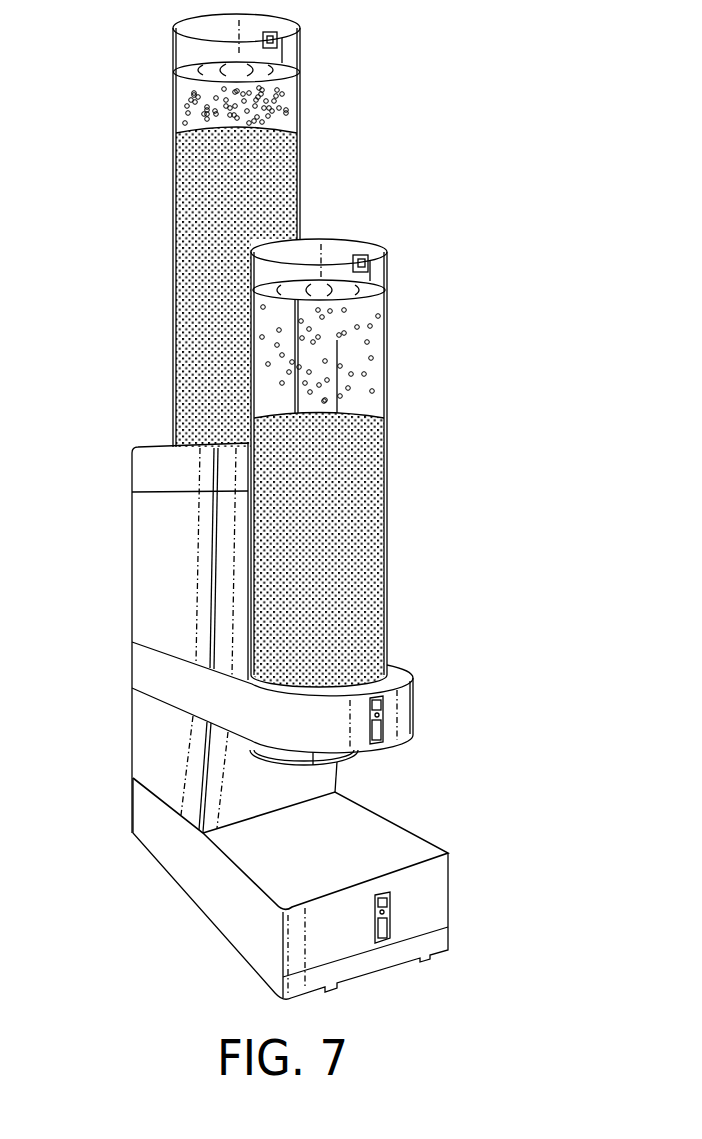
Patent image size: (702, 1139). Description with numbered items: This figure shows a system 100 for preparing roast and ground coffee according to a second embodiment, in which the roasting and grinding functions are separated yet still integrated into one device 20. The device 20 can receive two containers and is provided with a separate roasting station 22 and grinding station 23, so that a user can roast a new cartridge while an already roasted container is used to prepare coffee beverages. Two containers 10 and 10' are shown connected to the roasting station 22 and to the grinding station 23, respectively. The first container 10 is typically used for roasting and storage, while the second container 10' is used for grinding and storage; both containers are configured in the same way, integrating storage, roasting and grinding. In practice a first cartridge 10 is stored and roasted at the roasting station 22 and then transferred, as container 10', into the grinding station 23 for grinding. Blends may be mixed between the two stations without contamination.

The first container 10 is at (272, 230).
The second container 10' is at (358, 463).
The device 20 is at (133, 813).
The roasting station 22 is at (140, 473).
The grinding station 23 is at (414, 707).
The apparatus 100 is at (472, 528).